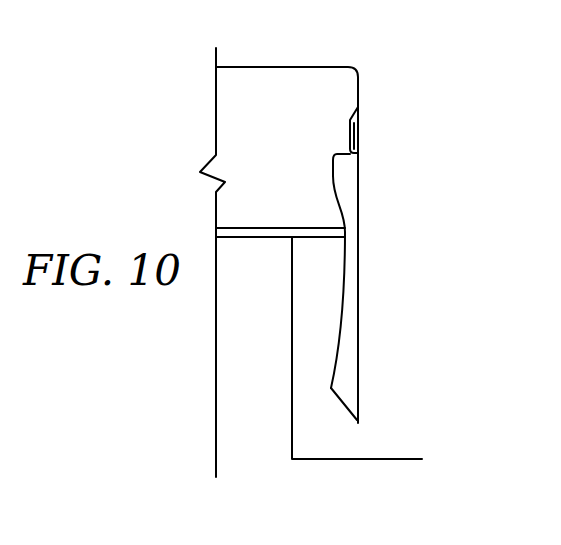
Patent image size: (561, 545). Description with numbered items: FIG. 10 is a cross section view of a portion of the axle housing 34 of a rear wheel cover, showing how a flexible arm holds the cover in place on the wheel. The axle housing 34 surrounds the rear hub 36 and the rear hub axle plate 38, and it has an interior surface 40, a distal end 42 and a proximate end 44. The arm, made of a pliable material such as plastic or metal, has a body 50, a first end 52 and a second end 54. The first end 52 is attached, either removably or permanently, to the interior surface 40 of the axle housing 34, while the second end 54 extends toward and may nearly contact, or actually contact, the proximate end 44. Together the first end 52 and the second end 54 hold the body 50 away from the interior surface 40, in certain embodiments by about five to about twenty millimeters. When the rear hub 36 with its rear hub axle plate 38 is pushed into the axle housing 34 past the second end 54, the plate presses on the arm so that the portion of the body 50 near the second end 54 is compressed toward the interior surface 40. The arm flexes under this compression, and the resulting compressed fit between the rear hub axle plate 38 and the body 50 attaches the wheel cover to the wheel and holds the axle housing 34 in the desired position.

The axle housing 34 is at (372, 52).
The rear hub 36 is at (266, 323).
The rear hub axle plate 38 is at (248, 230).
The interior surface 40 is at (357, 118).
The distal end 42 is at (272, 66).
The proximate end 44 is at (392, 413).
The body 50 is at (342, 268).
The first end 52 is at (338, 150).
The second end 54 is at (340, 398).